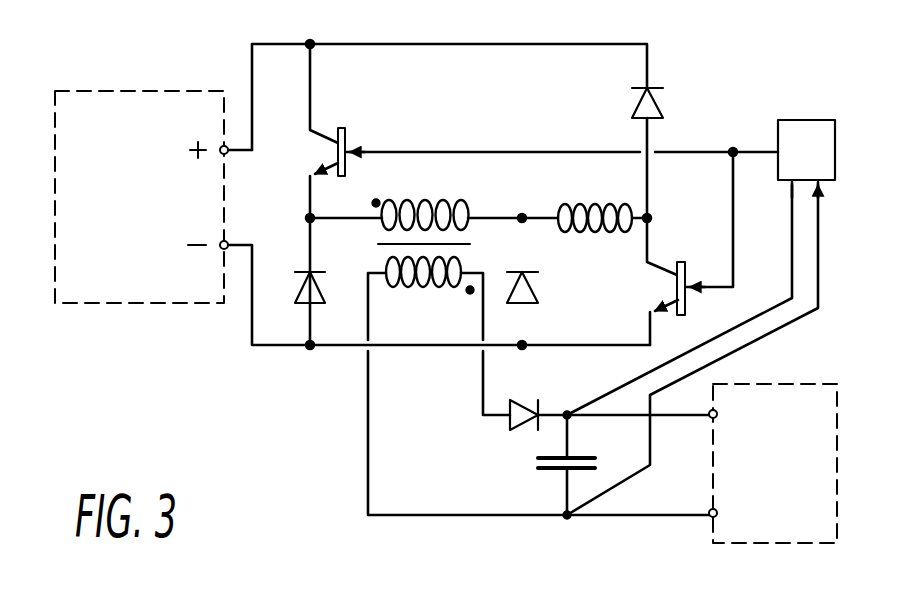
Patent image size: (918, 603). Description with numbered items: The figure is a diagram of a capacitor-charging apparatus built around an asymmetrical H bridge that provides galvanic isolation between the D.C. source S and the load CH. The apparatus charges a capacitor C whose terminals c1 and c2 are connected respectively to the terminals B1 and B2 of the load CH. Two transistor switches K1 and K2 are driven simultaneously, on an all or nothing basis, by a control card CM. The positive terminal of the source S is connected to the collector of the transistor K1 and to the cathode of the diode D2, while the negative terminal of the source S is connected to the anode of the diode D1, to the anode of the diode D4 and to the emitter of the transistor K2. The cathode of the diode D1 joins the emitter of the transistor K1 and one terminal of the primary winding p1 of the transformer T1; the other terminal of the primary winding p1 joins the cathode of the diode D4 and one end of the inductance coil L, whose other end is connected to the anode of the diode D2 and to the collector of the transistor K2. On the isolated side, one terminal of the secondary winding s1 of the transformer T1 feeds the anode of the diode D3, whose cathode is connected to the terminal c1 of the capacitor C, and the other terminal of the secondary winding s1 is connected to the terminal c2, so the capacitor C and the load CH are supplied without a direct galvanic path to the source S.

The source S is at (135, 90).
The switch K1 is at (352, 130).
The primary winding p1 is at (440, 202).
The transformer T1 is at (480, 246).
The secondary winding s1 is at (440, 282).
The inductance coil L is at (612, 206).
The diode D1 is at (302, 292).
The diode D2 is at (656, 100).
The diode D3 is at (505, 420).
The diode D4 is at (527, 284).
The switch K2 is at (692, 268).
The card CM is at (806, 135).
The capacitor C is at (550, 472).
The terminal c1 is at (569, 412).
The terminal c2 is at (567, 518).
The terminal B1 is at (733, 412).
The terminal B2 is at (733, 515).
The load CH is at (713, 489).